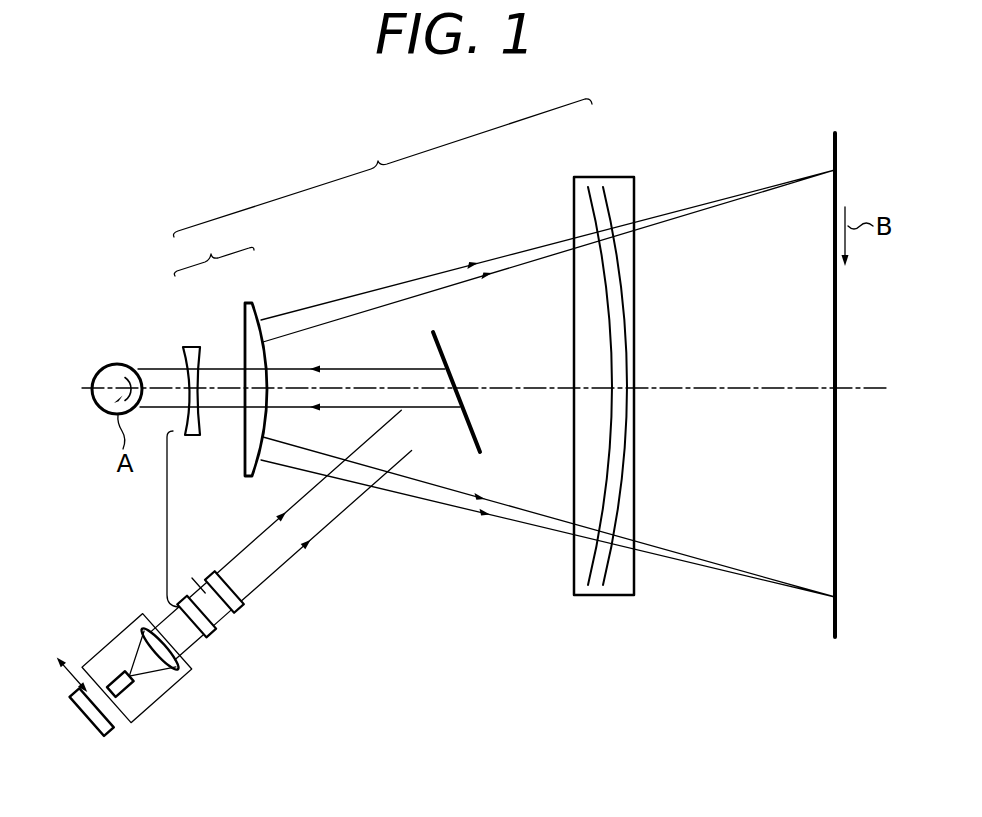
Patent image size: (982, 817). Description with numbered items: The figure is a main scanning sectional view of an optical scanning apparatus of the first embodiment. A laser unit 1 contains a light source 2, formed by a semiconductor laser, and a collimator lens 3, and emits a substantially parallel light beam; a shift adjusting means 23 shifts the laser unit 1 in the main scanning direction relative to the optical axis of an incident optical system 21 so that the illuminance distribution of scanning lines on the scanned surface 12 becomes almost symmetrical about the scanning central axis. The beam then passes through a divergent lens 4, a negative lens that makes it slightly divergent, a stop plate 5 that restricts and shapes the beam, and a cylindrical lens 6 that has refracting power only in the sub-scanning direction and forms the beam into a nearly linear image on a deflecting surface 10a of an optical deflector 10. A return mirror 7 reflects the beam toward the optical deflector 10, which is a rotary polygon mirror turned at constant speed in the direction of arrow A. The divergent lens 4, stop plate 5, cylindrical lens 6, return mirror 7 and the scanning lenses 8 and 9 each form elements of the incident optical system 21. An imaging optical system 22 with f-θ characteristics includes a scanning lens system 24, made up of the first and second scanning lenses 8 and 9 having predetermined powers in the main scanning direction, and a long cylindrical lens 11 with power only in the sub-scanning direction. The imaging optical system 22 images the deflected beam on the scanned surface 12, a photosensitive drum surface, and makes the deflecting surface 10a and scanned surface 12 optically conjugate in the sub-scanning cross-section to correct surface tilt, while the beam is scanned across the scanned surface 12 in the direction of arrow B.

The laser unit 1 is at (132, 724).
The light source 2 is at (133, 688).
The collimator lens 3 is at (178, 672).
The divergent lens 4 is at (213, 632).
The stop plate 5 is at (228, 621).
The cylindrical lens 6 is at (243, 606).
The return mirror 7 is at (444, 346).
The first scanning lens 8 is at (196, 345).
The second scanning lens 9 is at (249, 303).
The optical deflector 10 is at (111, 372).
The deflecting surface 10a is at (136, 377).
The long cylindrical lens 11 is at (581, 180).
The scanned surface 12 is at (838, 147).
The incident optical system 21 is at (166, 518).
The imaging optical system 22 is at (383, 168).
The shift adjusting means 23 is at (100, 733).
The scanning lens system 24 is at (214, 250).